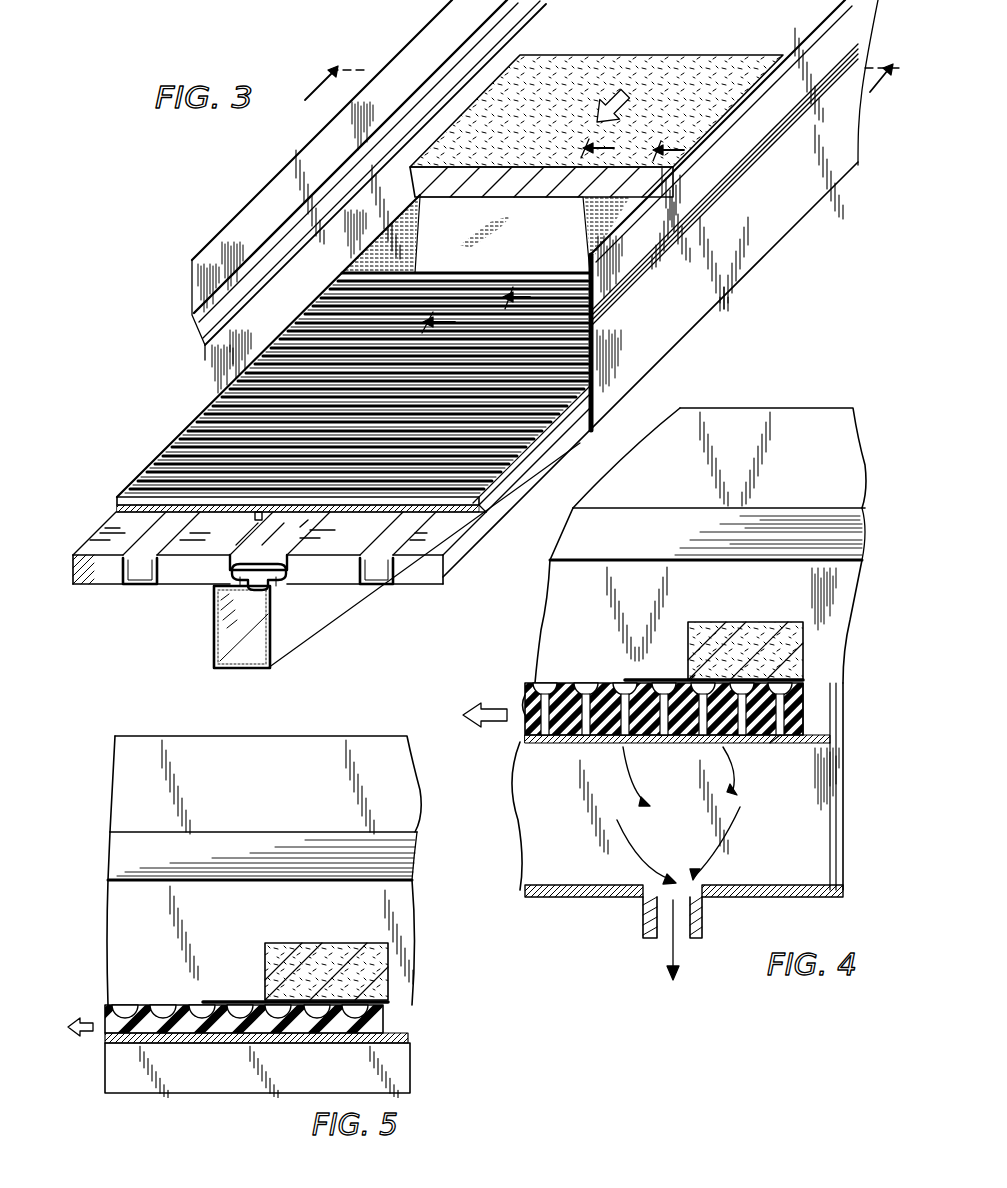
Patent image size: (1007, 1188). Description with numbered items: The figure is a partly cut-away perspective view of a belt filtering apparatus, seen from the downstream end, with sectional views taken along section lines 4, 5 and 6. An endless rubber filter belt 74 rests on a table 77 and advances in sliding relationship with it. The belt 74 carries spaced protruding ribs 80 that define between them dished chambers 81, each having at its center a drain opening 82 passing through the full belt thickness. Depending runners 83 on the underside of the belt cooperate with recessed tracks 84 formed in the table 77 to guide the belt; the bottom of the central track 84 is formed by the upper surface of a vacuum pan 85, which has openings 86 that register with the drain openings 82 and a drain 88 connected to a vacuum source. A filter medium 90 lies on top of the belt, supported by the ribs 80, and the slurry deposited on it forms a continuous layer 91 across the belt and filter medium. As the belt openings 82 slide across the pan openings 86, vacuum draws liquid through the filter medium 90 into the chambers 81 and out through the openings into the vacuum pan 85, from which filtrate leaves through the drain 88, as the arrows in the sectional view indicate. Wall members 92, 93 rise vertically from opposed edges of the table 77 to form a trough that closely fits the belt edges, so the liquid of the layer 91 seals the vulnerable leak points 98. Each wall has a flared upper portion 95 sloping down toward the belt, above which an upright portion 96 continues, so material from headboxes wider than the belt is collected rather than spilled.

In FIG. 3, the section line 4— 4 is at (596, 216).
In FIG. 3, the section line 5— 5 is at (528, 235).
In FIG. 3, the section line 6— 6 is at (601, 91).
In FIG. 3, the endless rubber filter belt 74 is at (185, 423).
In FIG. 4, the endless rubber filter belt 74 is at (525, 735).
In FIG. 5, the endless rubber filter belt 74 is at (110, 1012).
In FIG. 3, the table 77 is at (73, 586).
In FIG. 5, the table 77 is at (415, 1052).
In FIG. 3, the protruding ribs 80 is at (164, 471).
In FIG. 4, the protruding ribs 80 is at (608, 682).
In FIG. 5, the protruding ribs 80 is at (191, 1005).
In FIG. 3, the dished chambers 81 is at (242, 402).
In FIG. 4, the dished chambers 81 is at (578, 684).
In FIG. 5, the dished chambers 81 is at (153, 1005).
In FIG. 3, the drain opening 82 is at (307, 516).
In FIG. 4, the drain opening 82 is at (525, 697).
In FIG. 3, the depending runners 83 is at (143, 521).
In FIG. 4, the depending runners 83 is at (690, 744).
In FIG. 3, the recessed tracks 84 is at (141, 585).
In FIG. 4, the recessed tracks 84 is at (826, 735).
In FIG. 3, the vacuum pan 85 is at (214, 643).
In FIG. 4, the vacuum pan 85 is at (840, 760).
In FIG. 3, the openings 86 is at (273, 584).
In FIG. 4, the openings 86 is at (776, 745).
In FIG. 4, the drain 88 is at (690, 929).
In FIG. 3, the filter medium 90 is at (439, 235).
In FIG. 4, the filter medium 90 is at (665, 677).
In FIG. 5, the filter medium 90 is at (250, 1002).
In FIG. 3, the continuous layer of slurry 91 is at (582, 62).
In FIG. 4, the continuous layer of slurry 91 is at (763, 630).
In FIG. 5, the continuous layer of slurry 91 is at (372, 943).
In FIG. 3, the wall member 92 is at (277, 299).
In FIG. 4, the wall member 92 is at (566, 607).
In FIG. 5, the wall member 92 is at (235, 919).
In FIG. 3, the wall member 93 is at (646, 327).
In FIG. 3, the flared upper portion 95 is at (222, 302).
In FIG. 4, the flared upper portion 95 is at (639, 538).
In FIG. 5, the flared upper portion 95 is at (161, 865).
In FIG. 3, the vertically upright portion 96 is at (249, 234).
In FIG. 4, the vertically upright portion 96 is at (794, 475).
In FIG. 5, the vertically upright portion 96 is at (237, 791).
In FIG. 3, the leak points 98 is at (338, 273).